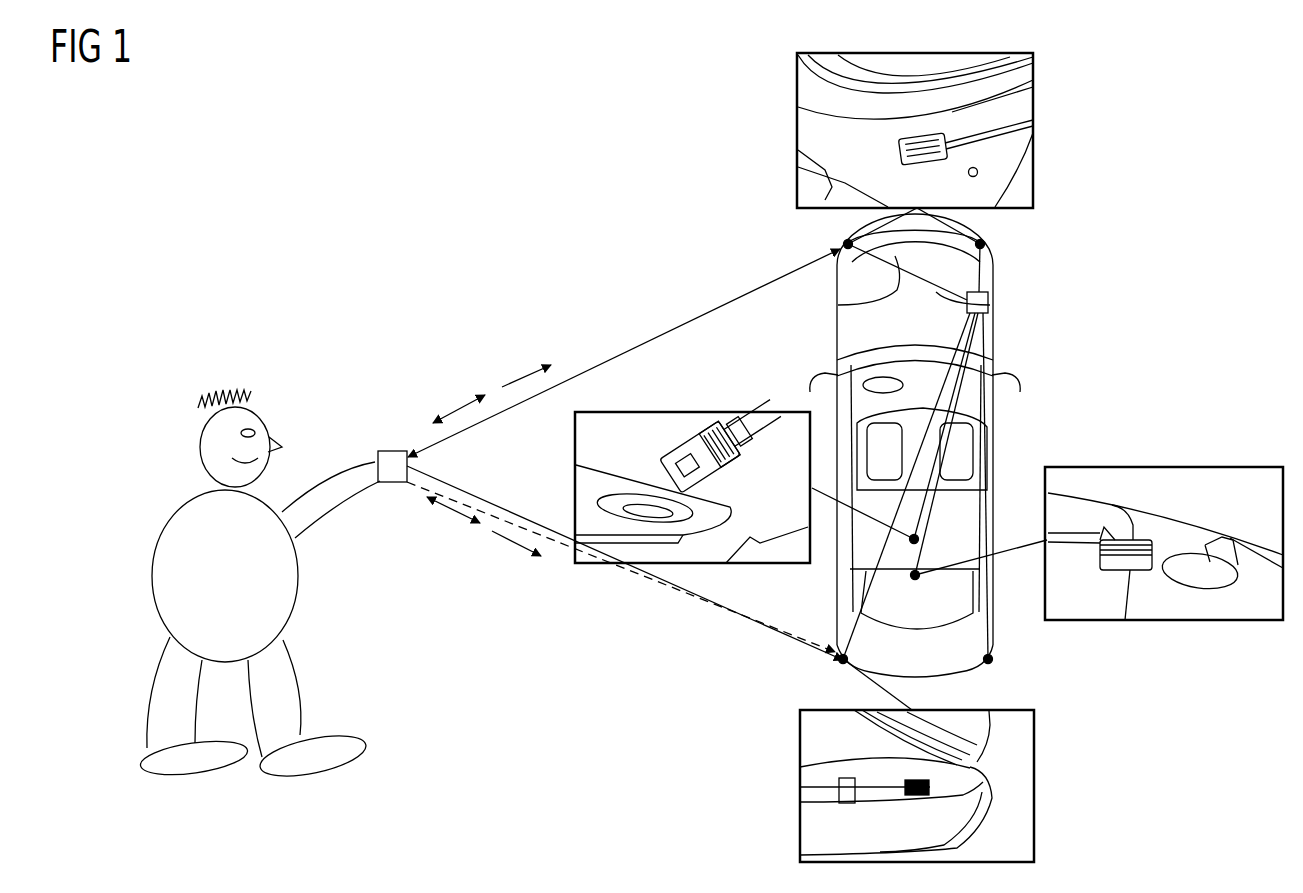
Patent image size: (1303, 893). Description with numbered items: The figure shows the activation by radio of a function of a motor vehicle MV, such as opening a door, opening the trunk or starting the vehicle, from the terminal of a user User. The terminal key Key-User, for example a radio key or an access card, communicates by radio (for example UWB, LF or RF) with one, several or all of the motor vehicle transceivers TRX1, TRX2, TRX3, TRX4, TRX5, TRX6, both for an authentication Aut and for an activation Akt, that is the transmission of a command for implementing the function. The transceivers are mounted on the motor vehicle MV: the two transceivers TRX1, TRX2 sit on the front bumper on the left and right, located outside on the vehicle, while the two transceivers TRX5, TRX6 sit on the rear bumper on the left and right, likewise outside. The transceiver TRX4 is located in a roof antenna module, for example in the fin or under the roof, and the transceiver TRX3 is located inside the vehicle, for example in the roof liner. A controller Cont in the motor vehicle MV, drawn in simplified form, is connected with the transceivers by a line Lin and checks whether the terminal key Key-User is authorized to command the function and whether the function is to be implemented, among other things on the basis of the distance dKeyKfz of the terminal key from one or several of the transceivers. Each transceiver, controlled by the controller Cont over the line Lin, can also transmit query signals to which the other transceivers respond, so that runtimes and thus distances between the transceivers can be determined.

The transceiver TRX1 is at (782, 135).
The transceiver TRX2 is at (1011, 233).
The transceiver TRX3 is at (781, 450).
The transceiver TRX4 is at (1083, 543).
The transceiver TRX5 is at (907, 759).
The transceiver TRX6 is at (1017, 676).
The controller Cont is at (988, 300).
The motor vehicle MV is at (993, 340).
The line Lin is at (842, 300).
The activation Akt is at (520, 463).
The authentication Aut is at (451, 464).
The distance of the terminal key from the motor vehicle dKeyKfz is at (621, 561).
The user User is at (200, 442).
The terminal key Key-User is at (388, 483).